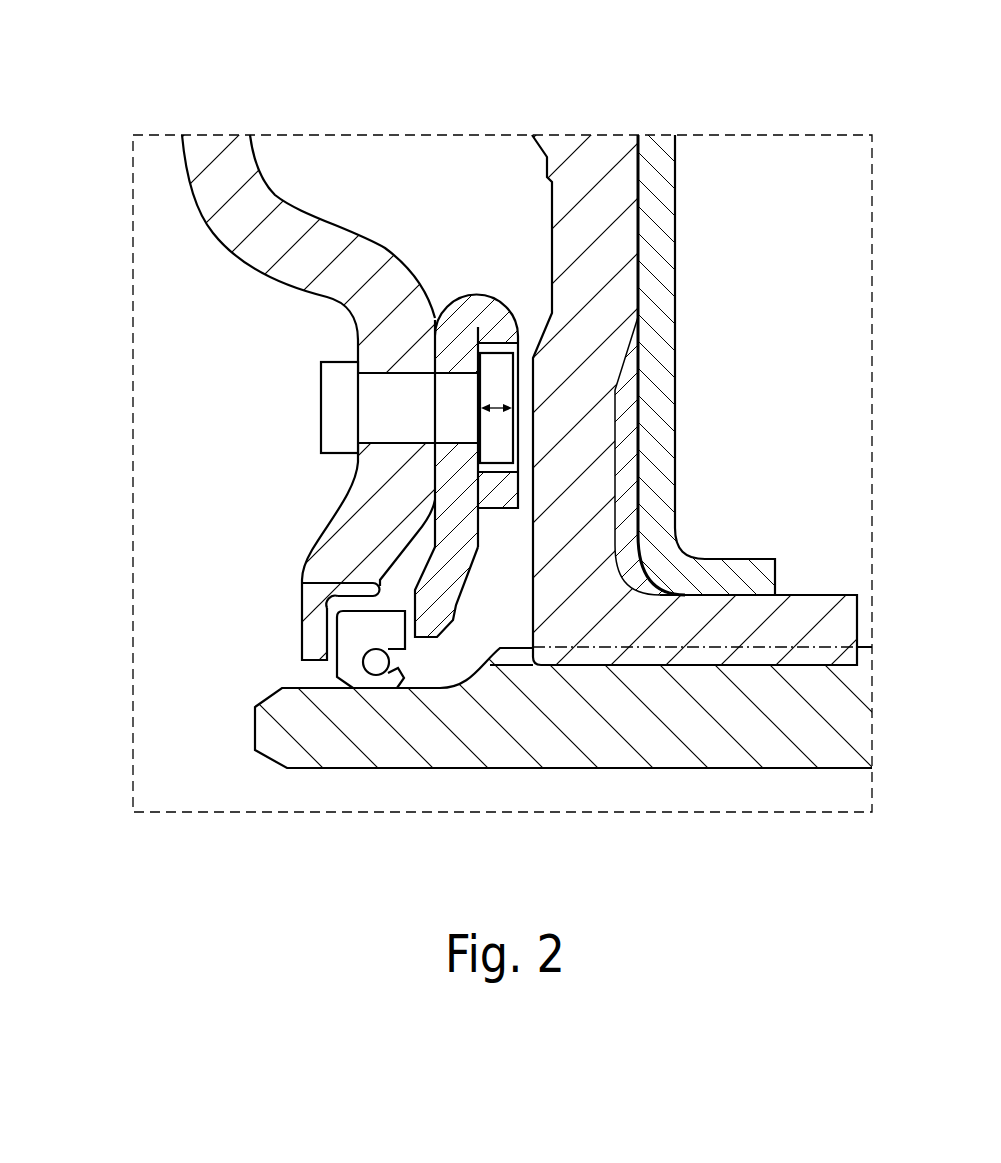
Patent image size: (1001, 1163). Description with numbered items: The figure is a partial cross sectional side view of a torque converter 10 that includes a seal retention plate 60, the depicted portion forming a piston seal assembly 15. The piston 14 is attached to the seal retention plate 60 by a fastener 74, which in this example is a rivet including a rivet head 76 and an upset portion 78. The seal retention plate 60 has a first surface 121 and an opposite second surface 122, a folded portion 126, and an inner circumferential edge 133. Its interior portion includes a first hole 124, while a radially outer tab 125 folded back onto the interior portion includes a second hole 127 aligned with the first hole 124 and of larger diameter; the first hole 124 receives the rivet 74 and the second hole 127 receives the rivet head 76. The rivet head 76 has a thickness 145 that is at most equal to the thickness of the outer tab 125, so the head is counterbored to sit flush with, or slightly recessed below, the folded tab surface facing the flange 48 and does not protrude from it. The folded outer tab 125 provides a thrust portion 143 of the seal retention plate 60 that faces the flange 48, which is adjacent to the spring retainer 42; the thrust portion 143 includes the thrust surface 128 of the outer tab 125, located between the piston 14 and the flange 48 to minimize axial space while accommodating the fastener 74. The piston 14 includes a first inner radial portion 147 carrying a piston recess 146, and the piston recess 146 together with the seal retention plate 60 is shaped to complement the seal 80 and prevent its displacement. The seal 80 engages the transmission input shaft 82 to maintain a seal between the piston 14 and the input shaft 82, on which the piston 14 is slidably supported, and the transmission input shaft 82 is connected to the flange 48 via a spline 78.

The sensor assembly 10 is at (308, 96).
The piston 14 is at (190, 193).
The piston seal assembly 15 is at (337, 338).
The spring retainer 42 is at (677, 202).
The flange 48 is at (800, 594).
The seal retention plate 60 is at (437, 312).
The fastener 74 is at (392, 441).
The rivet head 76 is at (492, 352).
The upset portion / spline 78 is at (320, 409).
The seal 80 is at (335, 668).
The transmission input shaft 82 is at (363, 769).
The first surface 121 is at (428, 530).
The second surface 122 is at (478, 512).
The first hole 124 is at (443, 445).
The outer tab 125 is at (537, 478).
The folded portion 126 is at (452, 300).
The second hole 127 is at (553, 313).
The thrust surface 128 is at (519, 377).
The inner circumferential edge 133 is at (416, 630).
The thrust portion 143 is at (520, 402).
The thickness 145 is at (500, 403).
The piston recess 146 is at (312, 612).
The first inner radial portion 147 is at (307, 583).